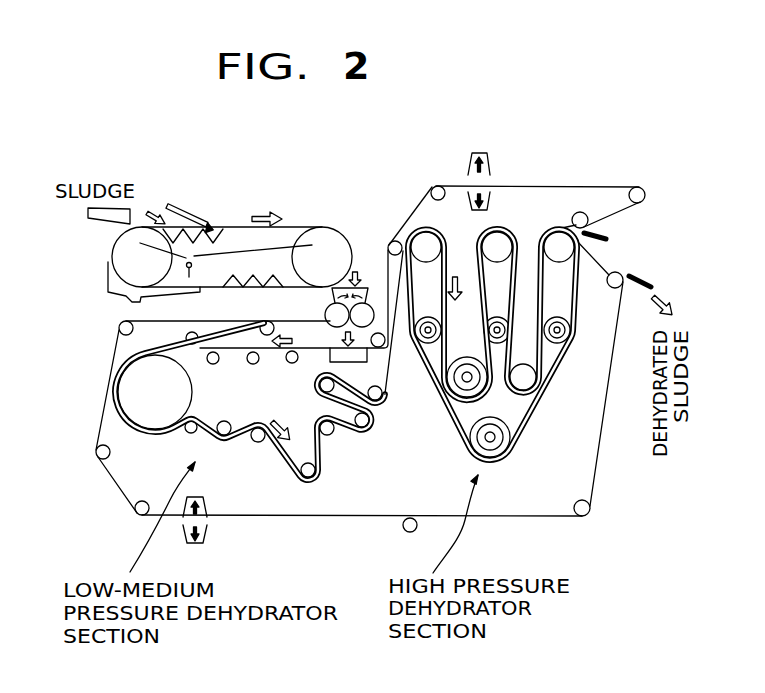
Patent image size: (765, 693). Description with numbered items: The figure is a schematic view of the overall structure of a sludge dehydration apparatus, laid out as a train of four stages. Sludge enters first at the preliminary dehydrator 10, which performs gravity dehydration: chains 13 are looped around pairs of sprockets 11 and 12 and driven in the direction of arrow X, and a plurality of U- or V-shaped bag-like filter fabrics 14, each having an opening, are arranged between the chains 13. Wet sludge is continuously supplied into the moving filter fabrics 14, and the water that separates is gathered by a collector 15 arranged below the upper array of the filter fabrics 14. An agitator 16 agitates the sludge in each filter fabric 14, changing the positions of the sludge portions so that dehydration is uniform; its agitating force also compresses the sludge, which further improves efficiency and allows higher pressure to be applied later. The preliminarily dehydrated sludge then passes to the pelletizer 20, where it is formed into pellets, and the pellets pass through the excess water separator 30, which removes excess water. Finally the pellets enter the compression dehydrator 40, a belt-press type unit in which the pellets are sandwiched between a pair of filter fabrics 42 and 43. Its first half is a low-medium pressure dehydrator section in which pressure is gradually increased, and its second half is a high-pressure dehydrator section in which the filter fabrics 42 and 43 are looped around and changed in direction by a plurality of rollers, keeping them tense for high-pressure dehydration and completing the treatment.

The preliminary dehydrator 10 is at (209, 221).
The sprocket 11 is at (125, 257).
The sprocket 12 is at (328, 233).
The chains 13 is at (295, 227).
The filter fabrics 14 is at (233, 227).
The collector 15 is at (213, 256).
The agitator 16 is at (200, 212).
The pelletizer 20 is at (368, 273).
The excess water separator 30 is at (322, 363).
The compression dehydrator 40 is at (100, 418).
The filter fabric 42 is at (556, 184).
The filter fabric 43 is at (541, 396).